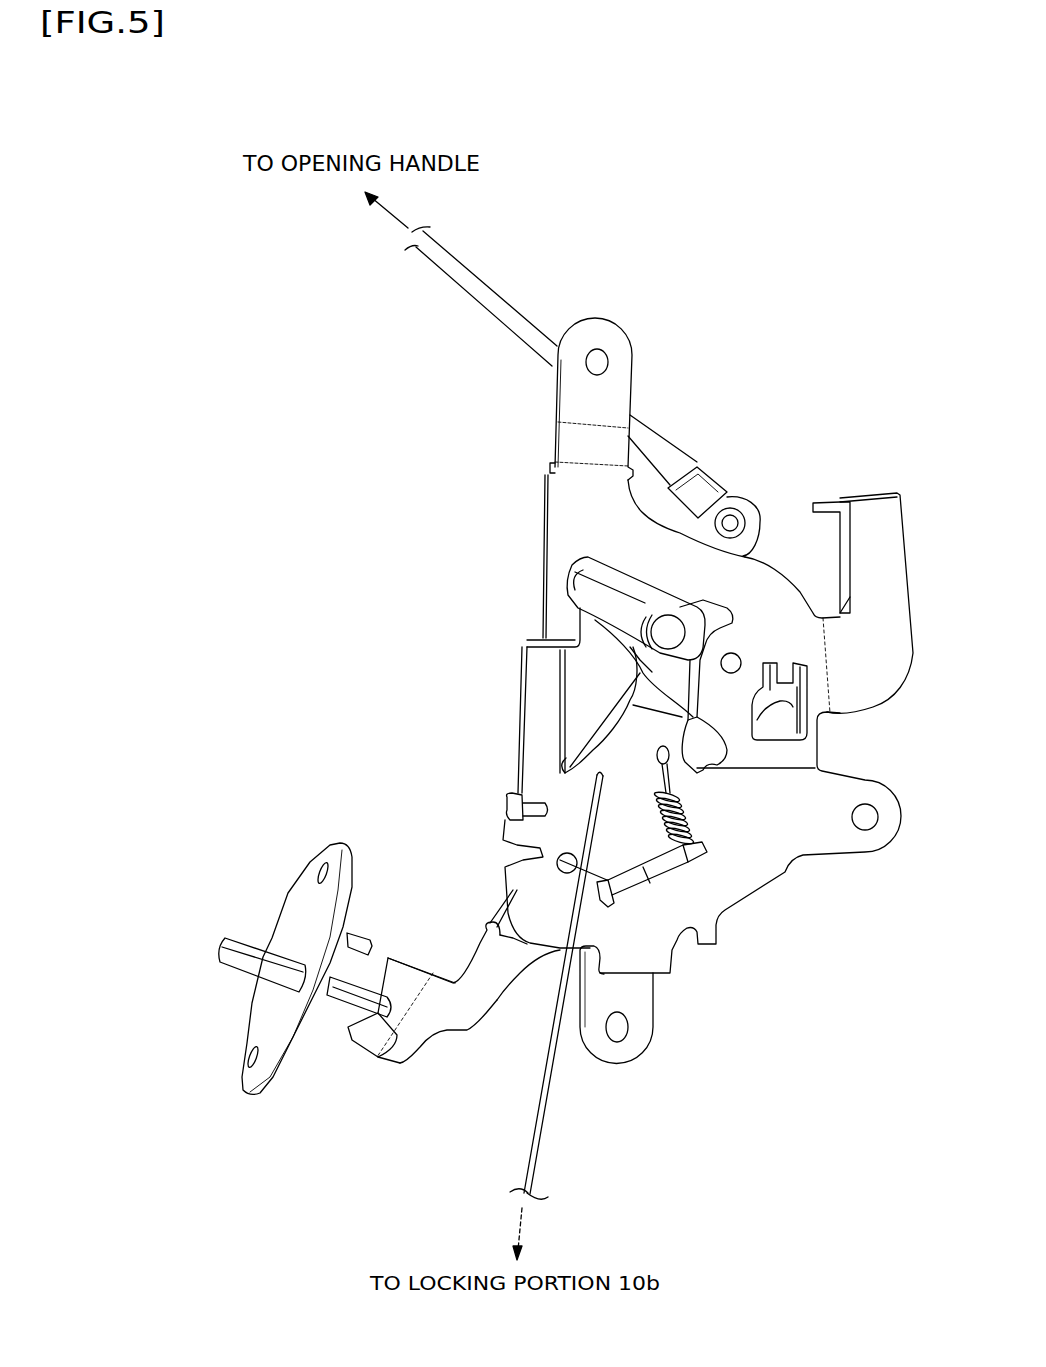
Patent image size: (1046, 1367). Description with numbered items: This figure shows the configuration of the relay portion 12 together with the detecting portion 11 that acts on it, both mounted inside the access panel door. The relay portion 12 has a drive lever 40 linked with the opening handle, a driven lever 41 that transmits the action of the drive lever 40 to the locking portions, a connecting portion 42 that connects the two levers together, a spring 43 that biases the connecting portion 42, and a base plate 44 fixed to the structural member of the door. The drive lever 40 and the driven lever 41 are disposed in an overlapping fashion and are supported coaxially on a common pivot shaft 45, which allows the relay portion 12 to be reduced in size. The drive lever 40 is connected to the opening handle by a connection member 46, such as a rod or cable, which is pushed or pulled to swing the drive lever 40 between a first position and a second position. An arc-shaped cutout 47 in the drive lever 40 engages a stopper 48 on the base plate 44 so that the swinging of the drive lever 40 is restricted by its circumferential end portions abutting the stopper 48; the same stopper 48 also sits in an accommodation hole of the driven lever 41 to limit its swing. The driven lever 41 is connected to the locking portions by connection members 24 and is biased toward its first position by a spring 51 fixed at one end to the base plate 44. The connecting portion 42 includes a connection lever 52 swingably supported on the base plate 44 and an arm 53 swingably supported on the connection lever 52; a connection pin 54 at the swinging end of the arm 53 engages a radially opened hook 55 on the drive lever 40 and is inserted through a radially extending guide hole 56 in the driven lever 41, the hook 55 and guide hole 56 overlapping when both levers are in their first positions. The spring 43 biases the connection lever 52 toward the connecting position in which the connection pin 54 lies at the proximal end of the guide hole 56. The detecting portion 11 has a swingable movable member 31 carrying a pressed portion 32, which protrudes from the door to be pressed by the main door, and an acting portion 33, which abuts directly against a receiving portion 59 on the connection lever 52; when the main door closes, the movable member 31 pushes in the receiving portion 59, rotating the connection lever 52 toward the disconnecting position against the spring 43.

The detecting portion 11 is at (305, 846).
The relay portion 12 is at (776, 413).
The connection member 24 is at (550, 1118).
The movable member 31 is at (249, 964).
The pressed portion 32 is at (223, 938).
The acting portion 33 is at (397, 1037).
The drive lever 40 is at (660, 673).
The driven lever 41 is at (640, 720).
The connecting portion 42 is at (475, 1037).
The spring 43 is at (507, 801).
The base plate 44 is at (770, 873).
The pivot shaft 45 is at (742, 660).
The connection member 46 is at (475, 282).
The cutout 47 is at (797, 710).
The stopper 48 is at (790, 677).
The spring 51 is at (660, 800).
The connection lever 52 is at (505, 983).
The arm 53 is at (665, 630).
The connection pin 54 is at (648, 632).
The hook 55 is at (630, 663).
The guide hole 56 is at (575, 565).
The receiving portion 59 is at (397, 973).